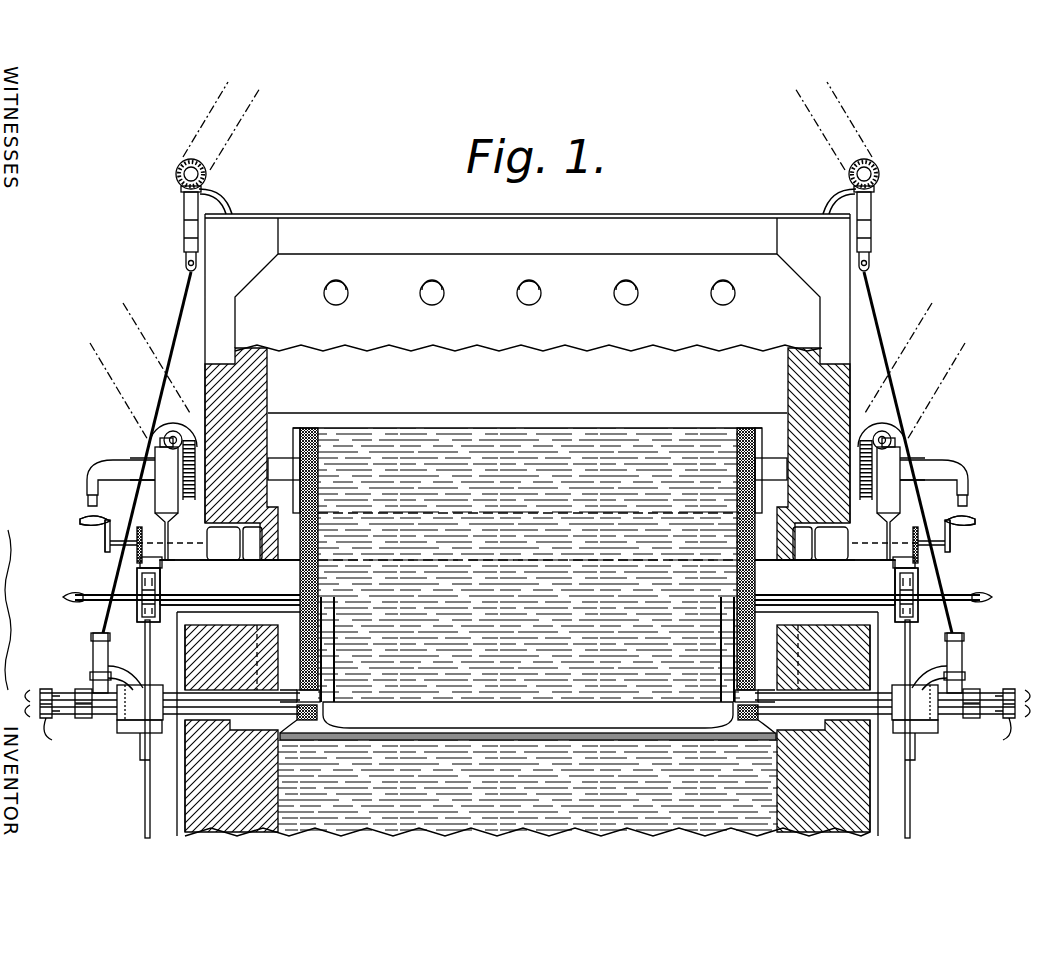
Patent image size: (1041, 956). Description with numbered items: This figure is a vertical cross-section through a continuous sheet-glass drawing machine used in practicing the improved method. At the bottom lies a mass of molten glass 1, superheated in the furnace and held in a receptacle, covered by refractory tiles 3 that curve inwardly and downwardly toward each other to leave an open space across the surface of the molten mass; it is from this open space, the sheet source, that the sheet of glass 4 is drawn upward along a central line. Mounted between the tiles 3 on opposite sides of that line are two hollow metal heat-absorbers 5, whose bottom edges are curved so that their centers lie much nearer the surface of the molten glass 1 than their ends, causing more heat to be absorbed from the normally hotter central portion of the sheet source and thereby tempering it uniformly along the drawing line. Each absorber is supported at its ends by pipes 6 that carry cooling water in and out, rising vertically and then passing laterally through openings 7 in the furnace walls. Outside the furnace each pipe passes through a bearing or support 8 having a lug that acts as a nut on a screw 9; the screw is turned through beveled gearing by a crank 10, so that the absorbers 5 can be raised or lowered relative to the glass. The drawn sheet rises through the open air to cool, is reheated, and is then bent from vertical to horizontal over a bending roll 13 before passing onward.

The mass of molten glass 1 is at (463, 828).
The tiles 3 is at (528, 559).
The sheet of glass 4 is at (503, 430).
The hollow bodies (heat-absorbers) 5 is at (467, 712).
The pipes 6 is at (203, 600).
The openings 7 is at (527, 582).
The bearing or support 8 is at (147, 597).
The screw 9 is at (140, 579).
The crank 10 is at (965, 522).
The bending roll 13 is at (297, 430).